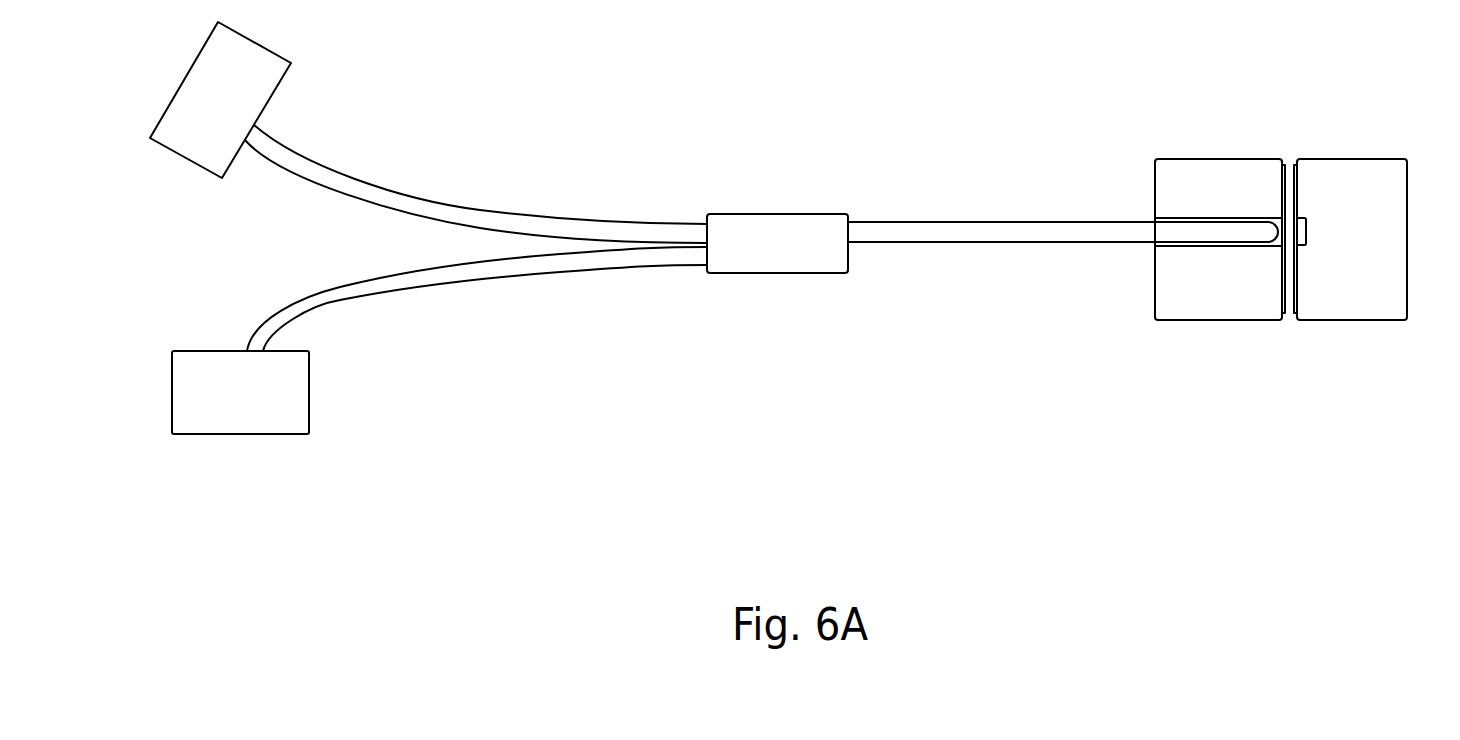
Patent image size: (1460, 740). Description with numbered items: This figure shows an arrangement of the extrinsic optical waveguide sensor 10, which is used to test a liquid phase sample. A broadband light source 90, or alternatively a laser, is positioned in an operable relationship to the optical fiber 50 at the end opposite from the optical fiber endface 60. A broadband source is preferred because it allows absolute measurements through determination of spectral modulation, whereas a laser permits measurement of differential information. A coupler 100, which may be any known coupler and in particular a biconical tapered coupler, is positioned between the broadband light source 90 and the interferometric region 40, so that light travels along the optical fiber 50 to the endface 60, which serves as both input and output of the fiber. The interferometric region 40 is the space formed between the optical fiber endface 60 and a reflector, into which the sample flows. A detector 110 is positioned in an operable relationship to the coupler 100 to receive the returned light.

The extrinsic optical waveguide sensor 10 is at (1373, 93).
The interferometric region 40 is at (1290, 212).
The optical fiber 50 is at (498, 225).
The optical fiber endface 60 is at (1275, 227).
The broadband light source 90 is at (220, 100).
The coupler 100 is at (777, 243).
The detector 110 is at (240, 392).